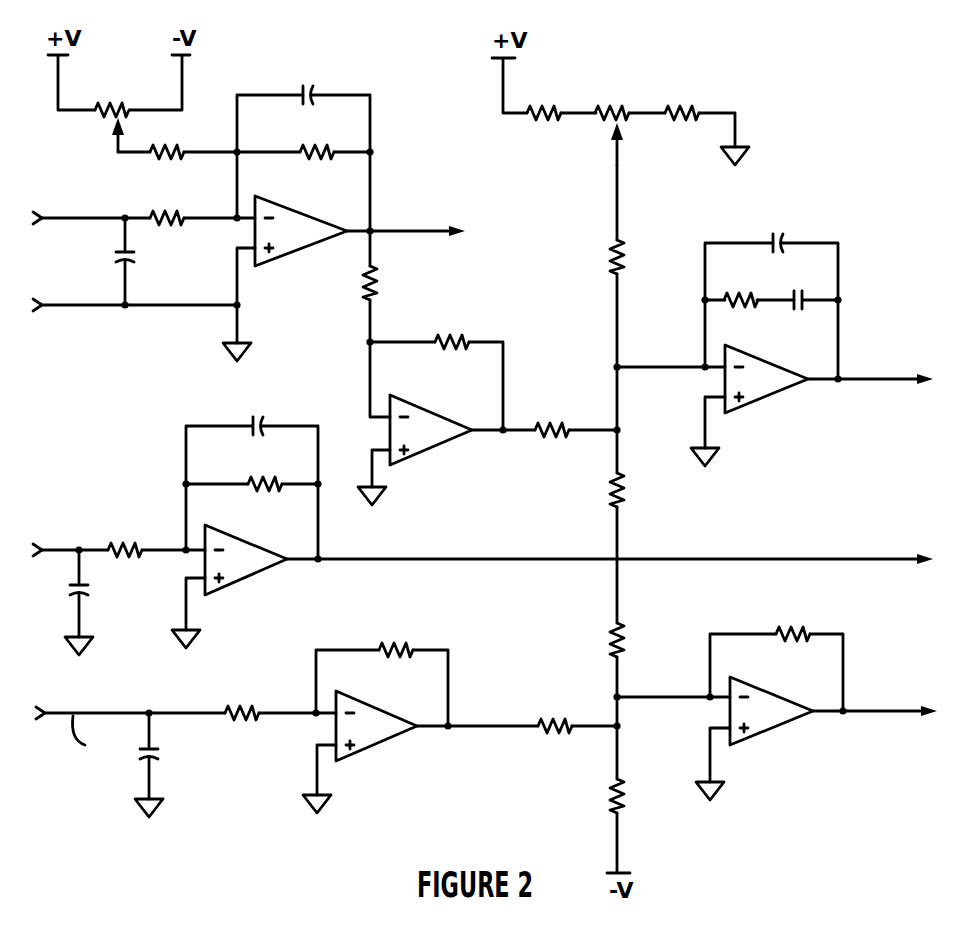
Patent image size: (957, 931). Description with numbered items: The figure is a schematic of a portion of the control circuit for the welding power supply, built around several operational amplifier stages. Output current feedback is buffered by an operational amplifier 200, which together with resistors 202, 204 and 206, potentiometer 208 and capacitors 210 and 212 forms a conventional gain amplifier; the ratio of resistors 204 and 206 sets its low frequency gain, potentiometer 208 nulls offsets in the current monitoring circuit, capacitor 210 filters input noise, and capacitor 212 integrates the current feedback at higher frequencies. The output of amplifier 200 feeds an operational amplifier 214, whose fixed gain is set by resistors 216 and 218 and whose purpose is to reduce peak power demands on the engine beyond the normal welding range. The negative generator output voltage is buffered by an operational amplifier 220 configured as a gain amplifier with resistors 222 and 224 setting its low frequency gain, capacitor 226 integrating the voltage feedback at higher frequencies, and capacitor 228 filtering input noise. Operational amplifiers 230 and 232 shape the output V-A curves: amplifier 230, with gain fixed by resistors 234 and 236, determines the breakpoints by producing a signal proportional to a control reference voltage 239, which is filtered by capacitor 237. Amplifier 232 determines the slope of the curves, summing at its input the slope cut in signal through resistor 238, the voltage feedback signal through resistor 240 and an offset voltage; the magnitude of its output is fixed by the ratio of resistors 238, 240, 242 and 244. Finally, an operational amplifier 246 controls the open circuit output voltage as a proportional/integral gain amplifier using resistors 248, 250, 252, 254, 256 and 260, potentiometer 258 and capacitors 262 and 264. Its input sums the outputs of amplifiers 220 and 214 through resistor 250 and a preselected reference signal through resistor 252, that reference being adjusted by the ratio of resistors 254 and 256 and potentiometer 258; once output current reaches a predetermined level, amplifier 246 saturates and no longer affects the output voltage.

The operational amplifier 200 is at (298, 206).
The resistor 202 is at (180, 146).
The resistor 204 is at (180, 211).
The resistor 206 is at (305, 146).
The potentiometer 208 is at (118, 108).
The capacitor 210 is at (138, 258).
The capacitor 212 is at (312, 88).
The operational amplifier 214 is at (432, 413).
The resistor 216 is at (380, 285).
The resistor 218 is at (458, 336).
The operational amplifier 220 is at (248, 542).
The resistor 222 is at (126, 546).
The resistor 224 is at (265, 479).
The capacitor 226 is at (260, 420).
The capacitor 228 is at (98, 594).
The operational amplifier 230 is at (378, 709).
The operational amplifier 232 is at (771, 696).
The resistor 234 is at (242, 709).
The resistor 236 is at (385, 645).
The capacitor 237 is at (166, 758).
The resistor 238 is at (553, 716).
The control reference voltage 239 is at (97, 742).
The resistor 240 is at (630, 645).
The resistor 242 is at (630, 799).
The resistor 244 is at (782, 629).
The operational amplifier 246 is at (766, 401).
The resistor 248 is at (561, 420).
The resistor 250 is at (628, 493).
The resistor 252 is at (628, 263).
The resistor 254 is at (530, 106).
The resistor 256 is at (692, 106).
The potentiometer 258 is at (622, 106).
The resistor 260 is at (732, 294).
The capacitor 262 is at (802, 310).
The capacitor 264 is at (780, 235).